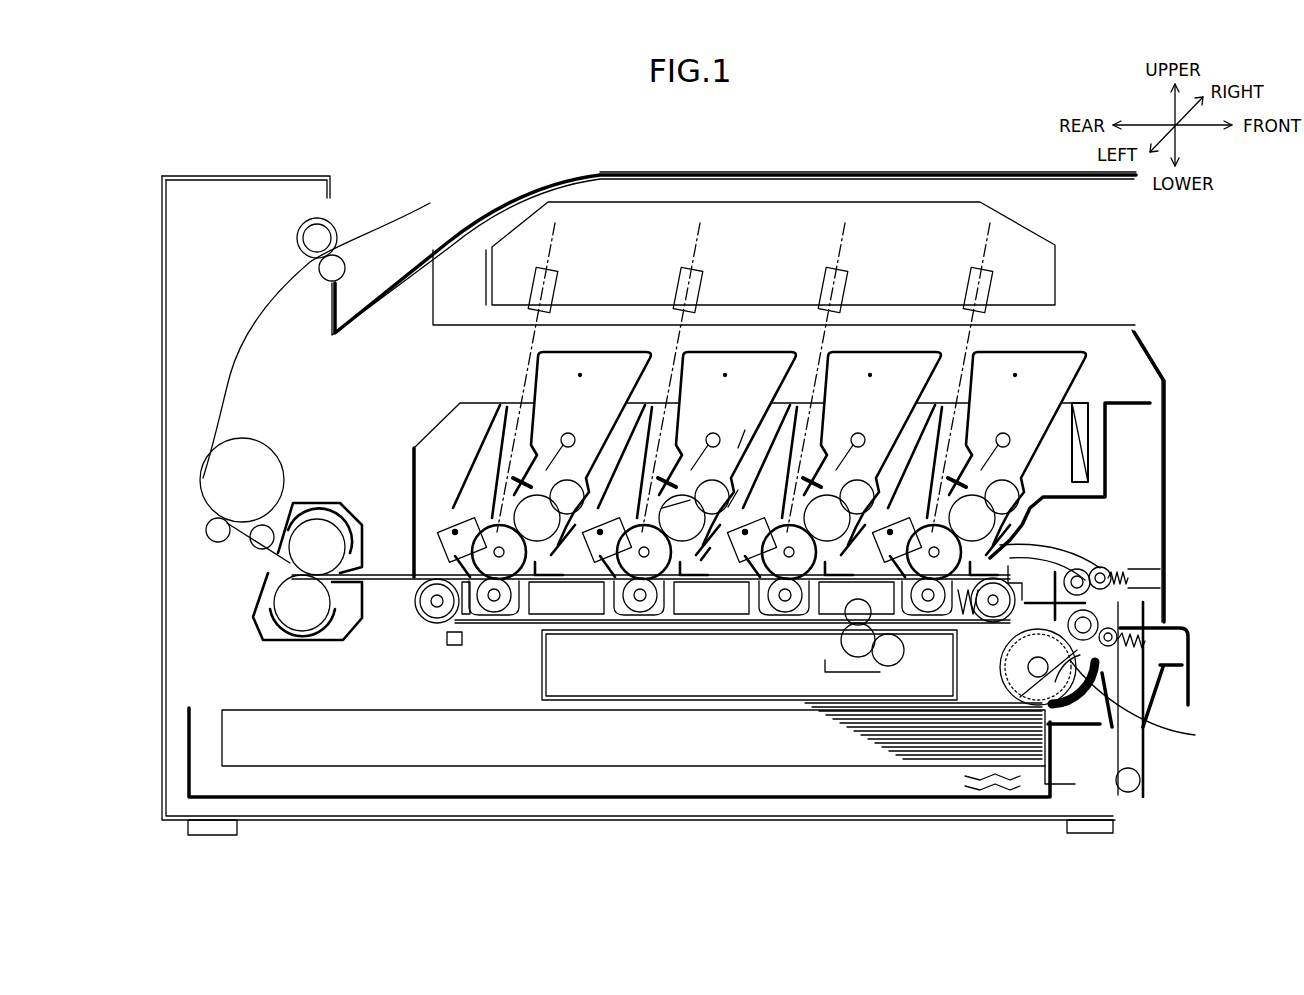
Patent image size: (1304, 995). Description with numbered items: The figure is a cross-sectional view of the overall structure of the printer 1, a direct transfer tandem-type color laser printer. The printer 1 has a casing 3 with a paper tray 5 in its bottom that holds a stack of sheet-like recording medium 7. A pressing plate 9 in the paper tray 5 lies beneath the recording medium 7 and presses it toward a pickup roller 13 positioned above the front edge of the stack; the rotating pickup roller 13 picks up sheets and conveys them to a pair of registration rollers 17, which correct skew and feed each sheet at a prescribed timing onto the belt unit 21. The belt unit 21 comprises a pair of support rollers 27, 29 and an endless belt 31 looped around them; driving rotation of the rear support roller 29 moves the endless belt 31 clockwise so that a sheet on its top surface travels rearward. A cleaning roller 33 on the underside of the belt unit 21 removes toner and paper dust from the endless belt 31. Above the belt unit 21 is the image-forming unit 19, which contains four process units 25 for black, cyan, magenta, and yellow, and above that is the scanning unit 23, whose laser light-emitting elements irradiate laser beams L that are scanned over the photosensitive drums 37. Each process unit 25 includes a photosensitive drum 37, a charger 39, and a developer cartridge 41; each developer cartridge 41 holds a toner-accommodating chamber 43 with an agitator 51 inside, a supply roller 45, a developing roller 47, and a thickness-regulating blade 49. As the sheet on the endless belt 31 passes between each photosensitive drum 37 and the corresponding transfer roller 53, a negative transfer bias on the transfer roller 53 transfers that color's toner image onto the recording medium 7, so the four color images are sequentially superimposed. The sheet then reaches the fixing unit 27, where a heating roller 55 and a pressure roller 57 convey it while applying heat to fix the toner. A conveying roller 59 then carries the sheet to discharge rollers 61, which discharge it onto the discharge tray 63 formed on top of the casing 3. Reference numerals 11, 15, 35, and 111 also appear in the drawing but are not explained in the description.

The printer 1 is at (969, 160).
The casing 3 is at (263, 176).
The paper tray 5 is at (422, 800).
The recording medium 7 is at (396, 225).
The pressing plate 9 is at (731, 770).
The lift spring 11 is at (990, 790).
The pickup roller 13 is at (1143, 655).
The separation pad 15 is at (1140, 728).
The registration rollers 17 is at (1093, 598).
The image-forming unit 19 is at (418, 410).
The belt unit 21 is at (491, 648).
The scanning unit 23 is at (777, 212).
The process unit 25 is at (591, 336).
The fixing unit 27 is at (258, 633).
The support roller 29 is at (437, 612).
The endless belt 31 is at (505, 625).
The cleaning roller 33 is at (850, 642).
The cleaning roller 35 is at (850, 616).
The photosensitive drum 37 is at (985, 425).
The charger 39 is at (598, 540).
The developer cartridge 41 is at (712, 550).
The toner-accommodating chamber 43 is at (719, 437).
The supply roller 45 is at (715, 492).
The developing roller 47 is at (700, 550).
The thickness-regulating blade 49 is at (682, 494).
The agitator 51 is at (737, 422).
The transfer roller 53 is at (510, 598).
The heating roller 55 is at (302, 556).
The pressure roller 57 is at (288, 598).
The conveying roller 59 is at (213, 482).
The discharge rollers 61 is at (317, 238).
The discharge tray 63 is at (468, 230).
The sensor 111 is at (455, 645).
The laser beam L is at (688, 265).